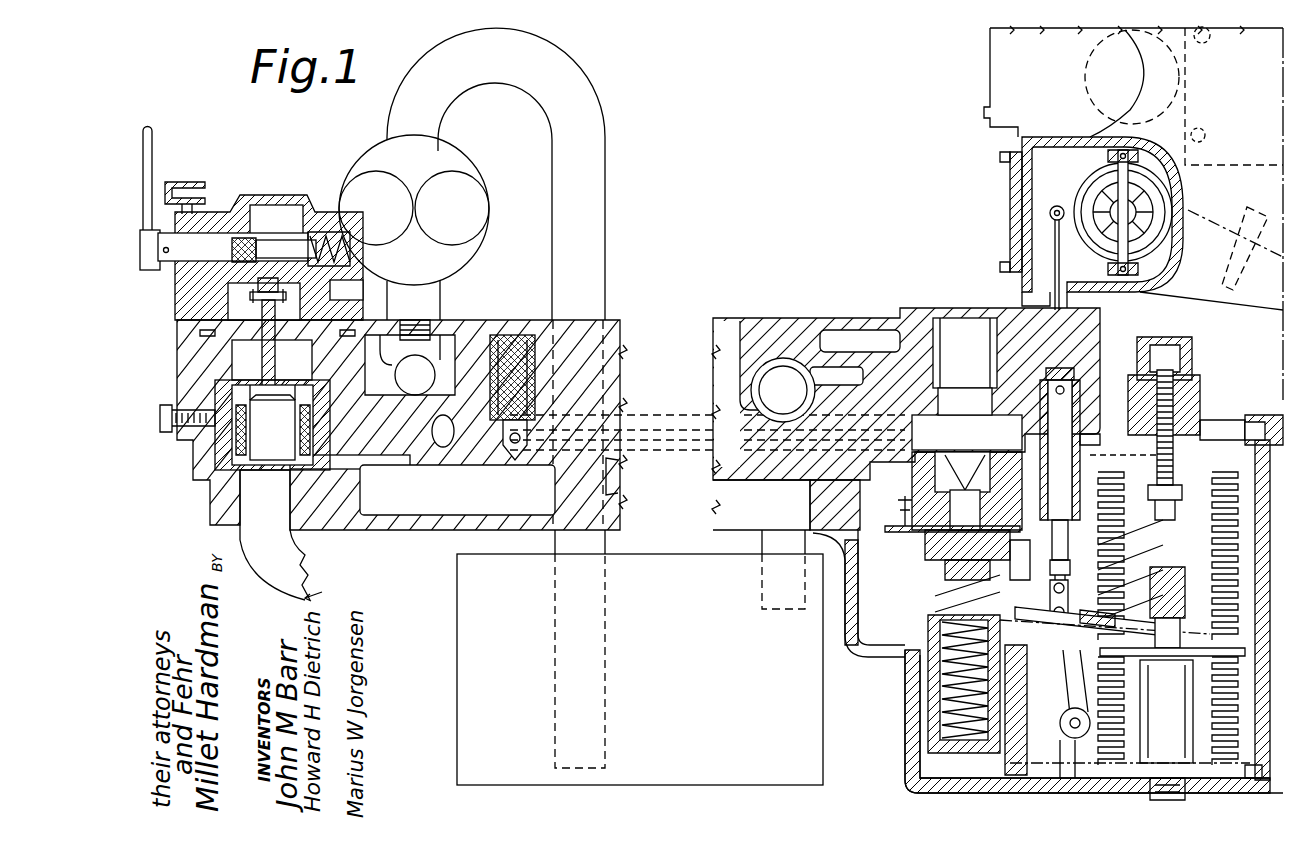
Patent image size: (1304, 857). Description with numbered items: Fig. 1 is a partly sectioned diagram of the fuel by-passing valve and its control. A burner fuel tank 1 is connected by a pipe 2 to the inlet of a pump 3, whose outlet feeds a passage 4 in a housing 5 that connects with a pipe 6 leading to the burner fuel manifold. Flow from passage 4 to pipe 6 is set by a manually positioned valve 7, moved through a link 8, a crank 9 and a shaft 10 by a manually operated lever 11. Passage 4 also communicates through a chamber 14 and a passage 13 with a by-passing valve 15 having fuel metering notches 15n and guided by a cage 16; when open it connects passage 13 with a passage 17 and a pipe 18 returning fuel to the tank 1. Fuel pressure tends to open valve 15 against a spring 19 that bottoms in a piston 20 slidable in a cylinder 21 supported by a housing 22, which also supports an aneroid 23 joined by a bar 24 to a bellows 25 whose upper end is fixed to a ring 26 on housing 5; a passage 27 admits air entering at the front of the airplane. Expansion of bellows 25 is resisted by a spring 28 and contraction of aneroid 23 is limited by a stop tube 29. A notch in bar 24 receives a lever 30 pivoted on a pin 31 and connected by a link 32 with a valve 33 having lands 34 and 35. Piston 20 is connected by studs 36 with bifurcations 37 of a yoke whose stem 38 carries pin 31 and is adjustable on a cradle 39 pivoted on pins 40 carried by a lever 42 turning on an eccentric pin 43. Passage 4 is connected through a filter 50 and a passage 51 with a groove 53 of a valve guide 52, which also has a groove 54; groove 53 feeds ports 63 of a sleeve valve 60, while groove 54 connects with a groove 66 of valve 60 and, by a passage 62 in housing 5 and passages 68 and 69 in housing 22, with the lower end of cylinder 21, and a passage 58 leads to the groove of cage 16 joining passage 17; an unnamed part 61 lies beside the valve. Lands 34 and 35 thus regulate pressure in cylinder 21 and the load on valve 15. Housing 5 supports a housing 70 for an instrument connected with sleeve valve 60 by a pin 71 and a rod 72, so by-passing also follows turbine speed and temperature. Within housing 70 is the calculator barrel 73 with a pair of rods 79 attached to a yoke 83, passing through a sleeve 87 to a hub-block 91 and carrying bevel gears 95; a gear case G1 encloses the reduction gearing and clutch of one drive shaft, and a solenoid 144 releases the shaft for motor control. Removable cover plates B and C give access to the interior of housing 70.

The burner fuel tank 1 is at (457, 558).
The pipe 2 is at (605, 172).
The pump 3 is at (472, 185).
The passage 4 is at (440, 345).
The housing 5 is at (177, 336).
The pipe 6 is at (305, 558).
The manually positioned valve 7 is at (232, 388).
The link 8 is at (280, 347).
The crank 9 is at (282, 292).
The shaft 10 is at (264, 236).
The manually operated lever 11 is at (152, 150).
The passage 13 is at (432, 425).
The chamber 14 is at (457, 490).
The by-passing valve 15 is at (967, 471).
The fuel metering notches 15n is at (968, 470).
The cage 16 is at (904, 502).
The passage 17 is at (800, 380).
The pipe 18 is at (760, 548).
The spring 19 is at (940, 598).
The piston 20 is at (920, 668).
The cylinder 21 is at (920, 700).
The housing 22 is at (915, 745).
The aneroid 23 is at (1208, 656).
The bar 24 is at (1185, 612).
The bellows 25 is at (1100, 562).
The ring 26 is at (1250, 415).
The passage 27 is at (1225, 420).
The spring 28 is at (1210, 500).
The stop tube 29 is at (1195, 703).
The lever 30 is at (1148, 640).
The pin 31 is at (1110, 618).
The link 32 is at (1050, 592).
The valve 33 is at (1080, 550).
The land 34 is at (1078, 402).
The land 35 is at (1160, 500).
The studs 36 is at (940, 632).
The bifurcations of yoke 37 is at (948, 612).
The stem 38 is at (1025, 560).
The cradle 39 is at (1040, 645).
The pins 40 is at (1080, 640).
The lever 42 is at (1068, 702).
The pin 43 is at (1062, 726).
The filter 50 is at (490, 405).
The passage 51 is at (688, 430).
The valve guide 52 is at (1050, 545).
The groove 53 is at (1022, 420).
The groove 54 is at (930, 518).
The passage 58 is at (1020, 500).
The sleeve valve 60 is at (1076, 376).
The push rod 61 is at (1060, 470).
The passage 62 is at (1192, 392).
The ports 63 is at (1022, 442).
The groove 66 is at (1127, 455).
The passage 68 is at (1255, 598).
The passage 69 is at (1015, 780).
The housing 70 is at (1022, 240).
The pin 71 is at (1082, 358).
The rod 72 is at (1085, 336).
The barrel 73 is at (1190, 206).
The rods 79 is at (1150, 170).
The yoke 83 is at (1078, 205).
The sleeve 87 is at (1150, 207).
The hub-block 91 is at (1140, 212).
The bevel gears 95 is at (1108, 158).
The solenoid 144 is at (1246, 332).
The removable cover plate B is at (990, 48).
The removable cover plate C is at (1010, 222).
The gear case G1 is at (1174, 96).